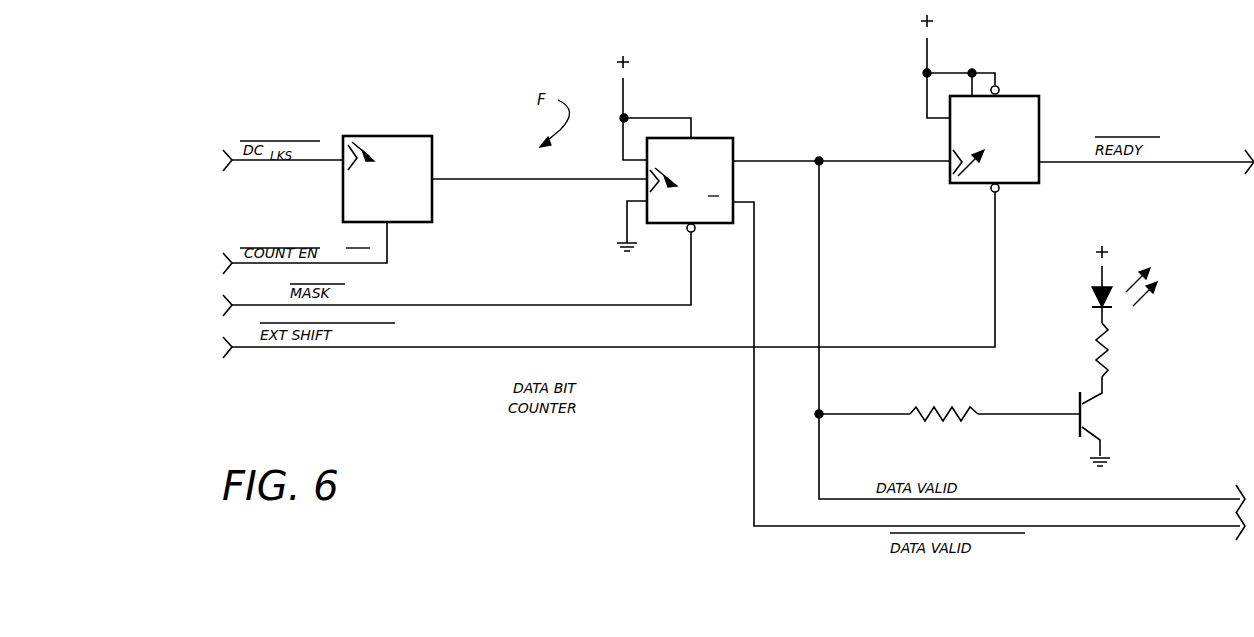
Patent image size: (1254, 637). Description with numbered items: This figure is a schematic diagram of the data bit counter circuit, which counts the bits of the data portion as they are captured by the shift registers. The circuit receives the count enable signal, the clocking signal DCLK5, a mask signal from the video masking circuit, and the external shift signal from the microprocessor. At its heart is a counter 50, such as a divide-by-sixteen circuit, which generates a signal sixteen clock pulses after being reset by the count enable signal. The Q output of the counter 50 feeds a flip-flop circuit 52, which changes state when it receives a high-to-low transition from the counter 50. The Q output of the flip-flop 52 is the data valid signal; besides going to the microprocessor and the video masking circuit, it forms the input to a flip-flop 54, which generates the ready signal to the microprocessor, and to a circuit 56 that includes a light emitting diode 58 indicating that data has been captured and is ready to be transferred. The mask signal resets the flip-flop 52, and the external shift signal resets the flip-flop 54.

The counter 50 is at (438, 100).
The flip-flop circuit 52 is at (740, 136).
The flip-flop 54 is at (1033, 102).
The circuit 56 is at (1120, 348).
The light emitting diode 58 is at (1090, 300).